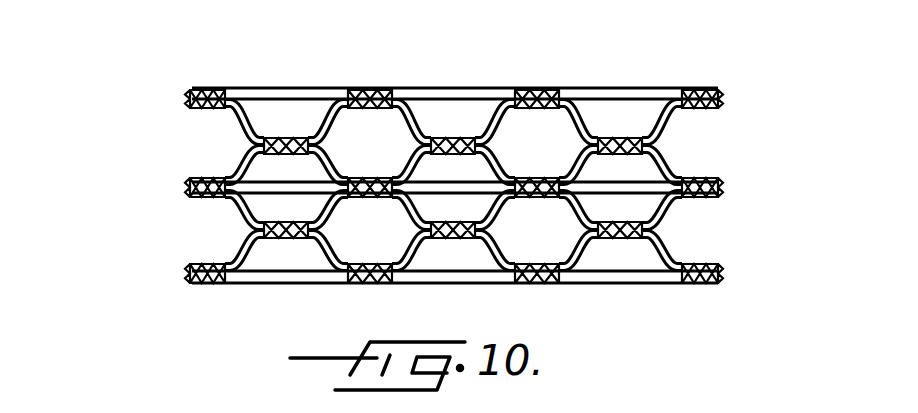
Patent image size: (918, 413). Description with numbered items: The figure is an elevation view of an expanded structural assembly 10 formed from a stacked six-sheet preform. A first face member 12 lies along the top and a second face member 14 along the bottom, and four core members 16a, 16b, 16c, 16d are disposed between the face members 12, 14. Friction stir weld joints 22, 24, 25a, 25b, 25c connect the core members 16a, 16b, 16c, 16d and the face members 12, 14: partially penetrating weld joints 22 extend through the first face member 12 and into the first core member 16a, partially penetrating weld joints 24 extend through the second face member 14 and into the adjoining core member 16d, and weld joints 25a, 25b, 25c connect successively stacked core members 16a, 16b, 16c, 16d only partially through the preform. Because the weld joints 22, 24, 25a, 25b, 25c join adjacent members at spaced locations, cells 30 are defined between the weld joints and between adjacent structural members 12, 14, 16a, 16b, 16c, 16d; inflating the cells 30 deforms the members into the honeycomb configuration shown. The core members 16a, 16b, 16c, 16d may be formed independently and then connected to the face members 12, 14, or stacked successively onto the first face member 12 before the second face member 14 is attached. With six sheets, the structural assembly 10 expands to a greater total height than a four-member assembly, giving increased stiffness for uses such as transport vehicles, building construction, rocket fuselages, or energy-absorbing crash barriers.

The structural assembly 10 is at (420, 176).
The first face member 12 is at (238, 88).
The second face member 14 is at (255, 284).
The first core member 16a is at (230, 110).
The second core member 16b is at (233, 167).
The third core member 16c is at (233, 207).
The fourth core member 16d is at (237, 253).
The friction stir weld joints 22 is at (356, 80).
The friction stir weld joints 24 is at (357, 291).
The friction stir weld joints 25a is at (442, 125).
The friction stir weld joints 25b is at (361, 170).
The friction stir weld joints 25c is at (457, 249).
The cells 30 is at (287, 178).